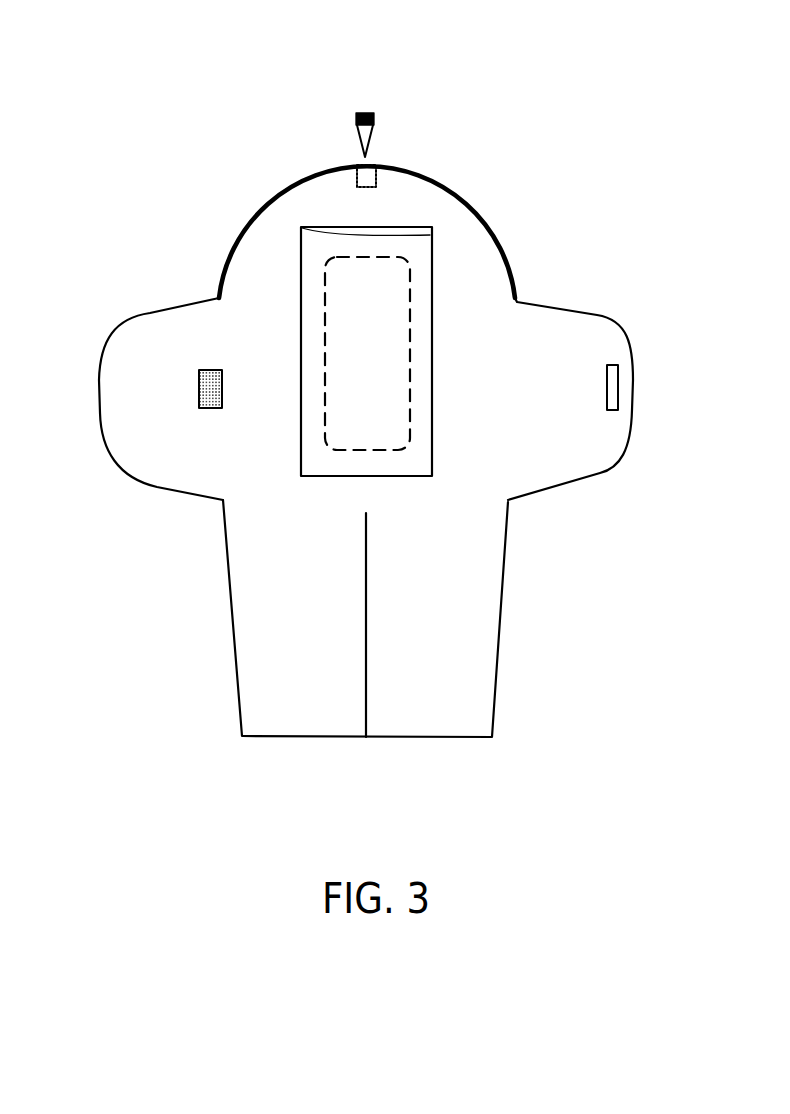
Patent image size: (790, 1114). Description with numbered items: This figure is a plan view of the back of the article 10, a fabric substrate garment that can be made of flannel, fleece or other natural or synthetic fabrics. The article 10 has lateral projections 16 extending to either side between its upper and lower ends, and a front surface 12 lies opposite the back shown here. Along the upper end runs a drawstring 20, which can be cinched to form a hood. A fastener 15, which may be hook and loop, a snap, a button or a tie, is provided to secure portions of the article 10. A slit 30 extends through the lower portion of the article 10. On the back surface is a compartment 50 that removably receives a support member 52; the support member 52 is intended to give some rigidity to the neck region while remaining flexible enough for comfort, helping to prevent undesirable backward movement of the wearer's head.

The article 10 is at (168, 72).
The front surface 12 is at (135, 425).
The fastener 15 is at (211, 369).
The lateral projection 16 is at (102, 359).
The drawstring 20 is at (364, 152).
The slit 30 is at (365, 638).
The compartment 50 is at (430, 308).
The support member 52 is at (408, 348).